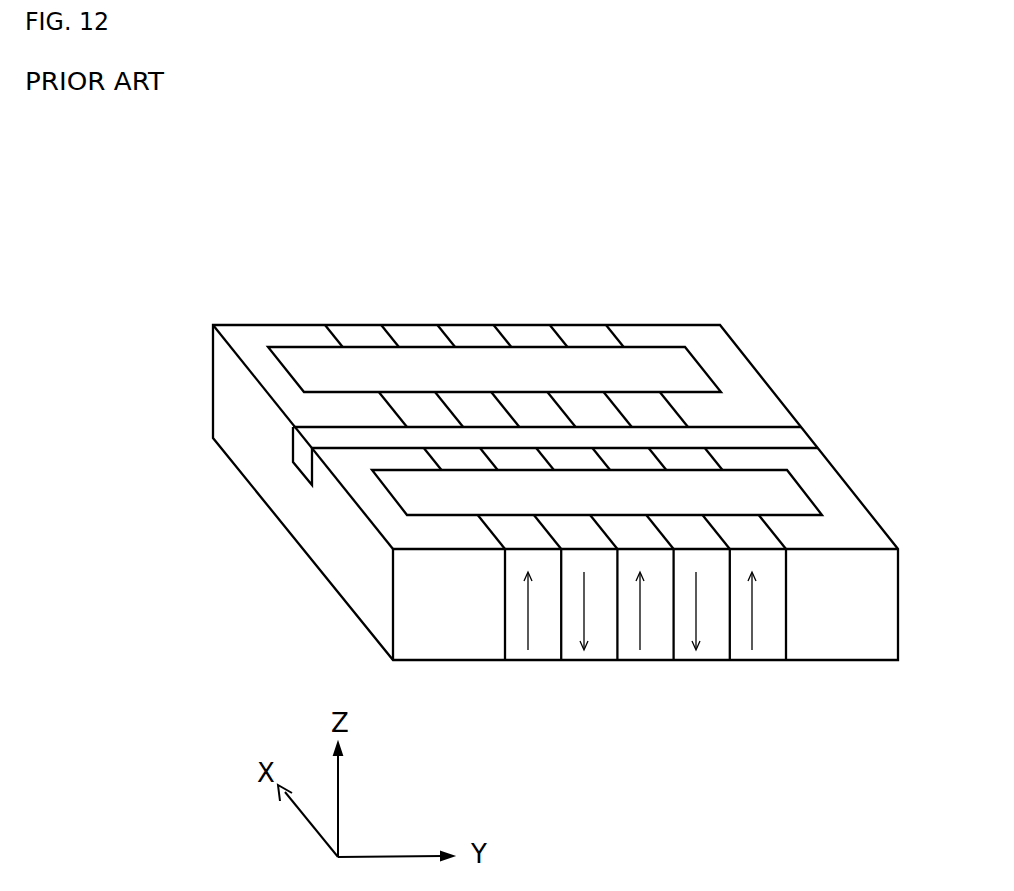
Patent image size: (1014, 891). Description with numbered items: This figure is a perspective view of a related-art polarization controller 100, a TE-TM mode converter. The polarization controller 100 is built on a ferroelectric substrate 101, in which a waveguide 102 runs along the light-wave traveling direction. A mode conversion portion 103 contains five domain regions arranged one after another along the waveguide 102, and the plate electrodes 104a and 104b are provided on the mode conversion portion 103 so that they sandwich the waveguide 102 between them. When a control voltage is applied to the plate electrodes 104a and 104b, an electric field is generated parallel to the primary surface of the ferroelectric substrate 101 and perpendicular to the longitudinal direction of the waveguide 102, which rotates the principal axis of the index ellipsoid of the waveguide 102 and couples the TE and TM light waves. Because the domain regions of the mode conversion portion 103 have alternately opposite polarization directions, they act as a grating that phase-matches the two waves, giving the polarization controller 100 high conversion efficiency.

The polarization controller 100 is at (263, 190).
The ferroelectric substrate 101 is at (235, 402).
The waveguide 102 is at (300, 460).
The mode conversion portion 103 is at (787, 682).
The plate electrode 104a is at (502, 367).
The plate electrode 104b is at (717, 490).